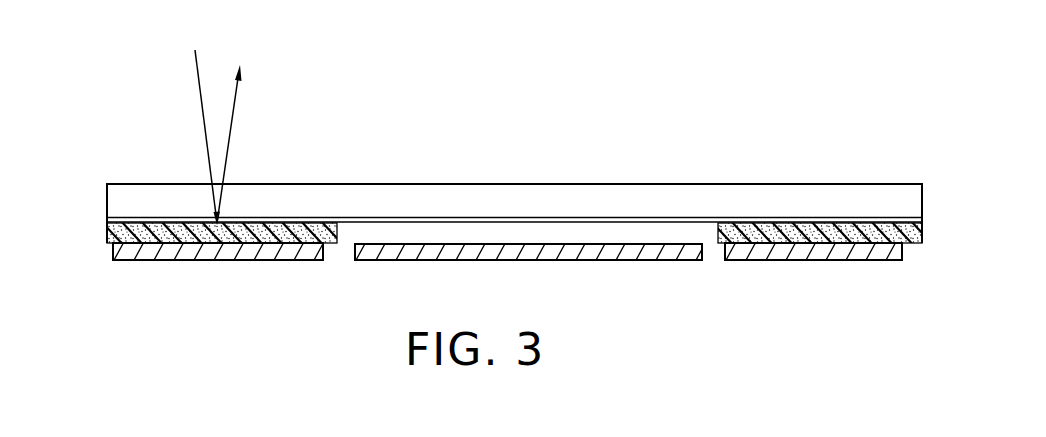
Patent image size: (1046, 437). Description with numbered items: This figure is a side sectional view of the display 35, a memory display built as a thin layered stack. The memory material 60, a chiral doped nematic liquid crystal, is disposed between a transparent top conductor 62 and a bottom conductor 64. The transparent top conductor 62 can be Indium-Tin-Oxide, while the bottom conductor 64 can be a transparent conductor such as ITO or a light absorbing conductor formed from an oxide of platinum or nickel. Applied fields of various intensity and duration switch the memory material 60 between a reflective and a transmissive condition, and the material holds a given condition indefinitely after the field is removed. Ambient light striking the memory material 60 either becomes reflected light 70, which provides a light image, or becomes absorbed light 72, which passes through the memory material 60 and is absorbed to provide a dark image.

The display 35 is at (147, 162).
The memory material 60 is at (114, 231).
The transparent top conductor 62 is at (121, 213).
The bottom conductor 64 is at (123, 260).
The reflected light 70 is at (234, 133).
The absorbed light 72 is at (514, 232).